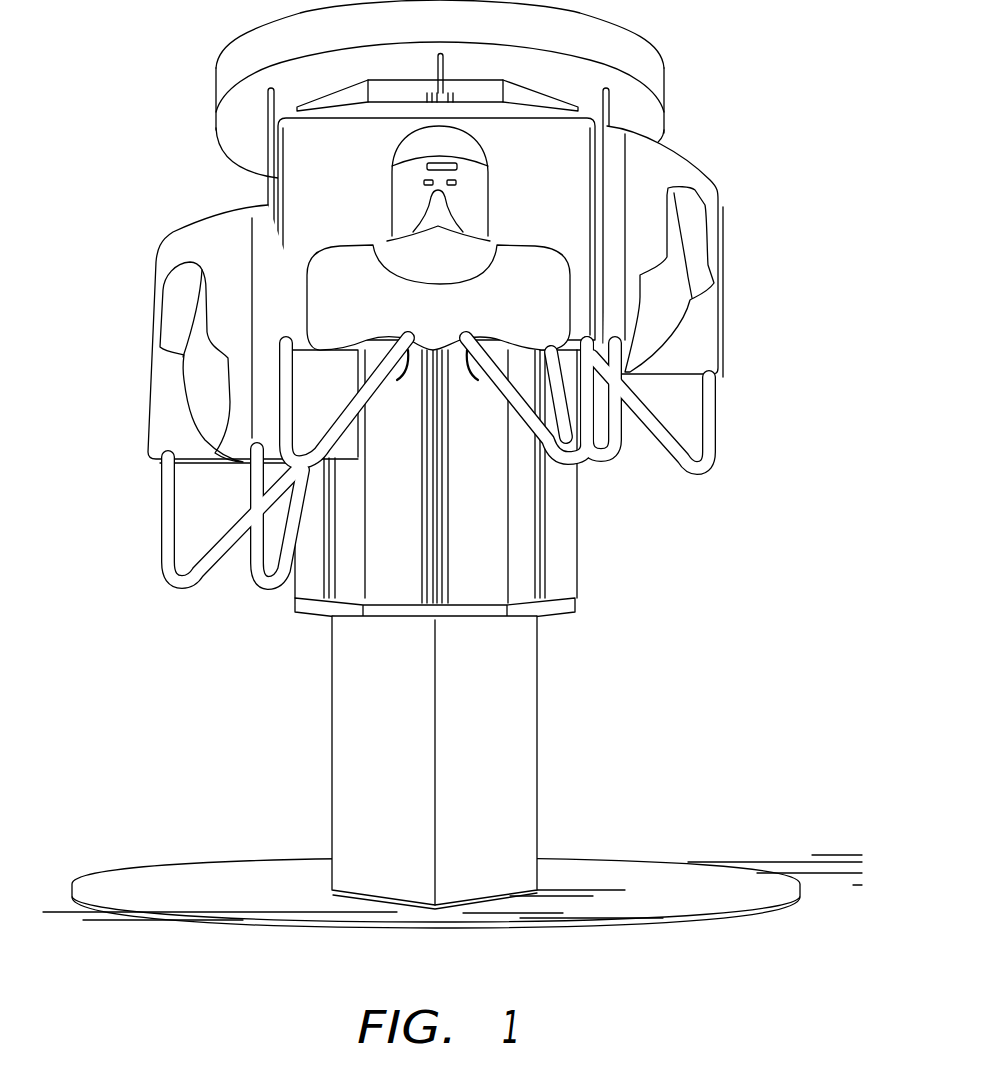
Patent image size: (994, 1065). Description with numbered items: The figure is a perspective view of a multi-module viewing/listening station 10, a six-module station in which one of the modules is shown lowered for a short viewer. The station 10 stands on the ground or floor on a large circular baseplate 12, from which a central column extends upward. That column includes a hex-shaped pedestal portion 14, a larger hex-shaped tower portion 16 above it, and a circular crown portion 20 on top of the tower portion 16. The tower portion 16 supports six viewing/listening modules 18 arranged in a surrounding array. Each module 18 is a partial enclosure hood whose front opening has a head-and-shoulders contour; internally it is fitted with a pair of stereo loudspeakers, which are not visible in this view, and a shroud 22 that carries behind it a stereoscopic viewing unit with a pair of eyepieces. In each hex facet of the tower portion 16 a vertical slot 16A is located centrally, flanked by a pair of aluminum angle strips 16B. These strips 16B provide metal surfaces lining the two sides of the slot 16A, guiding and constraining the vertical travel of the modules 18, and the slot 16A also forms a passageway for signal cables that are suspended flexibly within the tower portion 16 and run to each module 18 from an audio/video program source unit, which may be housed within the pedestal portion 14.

The multi-module viewing/listening station 10 is at (97, 70).
The baseplate 12 is at (277, 902).
The pedestal portion 14 is at (409, 751).
The tower portion 16 is at (438, 465).
The vertical slot 16A is at (436, 604).
The aluminum angle strips 16B is at (429, 604).
The viewing/listening module 18 is at (555, 177).
The crown portion 20 is at (268, 48).
The shroud 22 is at (415, 200).